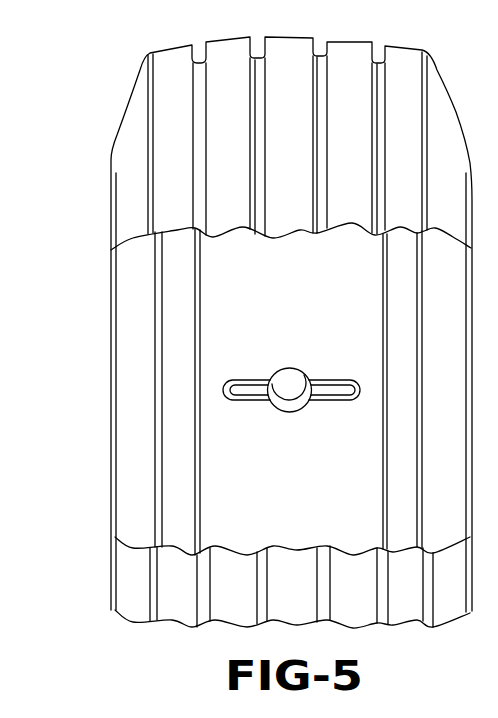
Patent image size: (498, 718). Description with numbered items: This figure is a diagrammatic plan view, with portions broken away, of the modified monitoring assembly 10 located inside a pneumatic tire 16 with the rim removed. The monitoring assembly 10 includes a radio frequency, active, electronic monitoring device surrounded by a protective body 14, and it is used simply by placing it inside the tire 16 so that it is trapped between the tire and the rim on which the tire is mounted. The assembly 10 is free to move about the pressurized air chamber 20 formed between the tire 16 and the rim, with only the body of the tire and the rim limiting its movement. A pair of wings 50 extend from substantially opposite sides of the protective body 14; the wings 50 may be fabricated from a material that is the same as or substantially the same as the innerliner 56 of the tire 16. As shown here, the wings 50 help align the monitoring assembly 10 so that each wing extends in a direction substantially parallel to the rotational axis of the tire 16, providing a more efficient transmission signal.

The tire 16 is at (130, 91).
The innerliner 56 is at (238, 280).
The pressurized air chamber 20 is at (243, 490).
The protective body 14 is at (278, 358).
The wings 50 is at (233, 365).
The monitoring assembly 10 is at (289, 404).